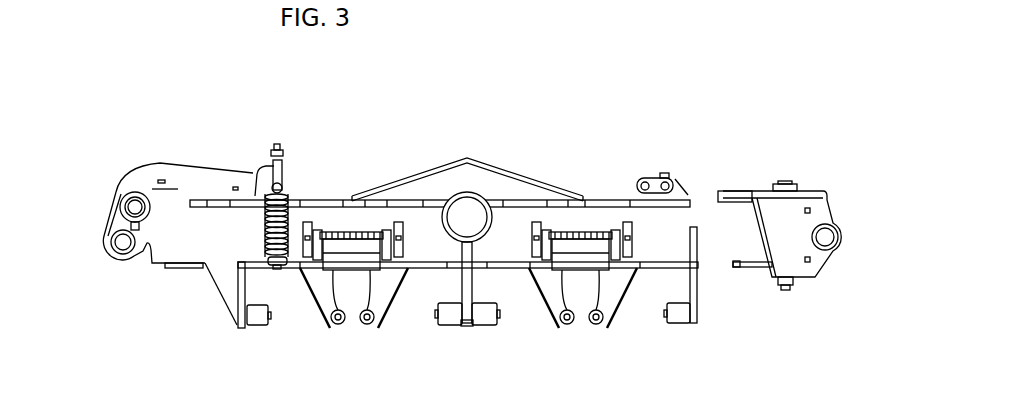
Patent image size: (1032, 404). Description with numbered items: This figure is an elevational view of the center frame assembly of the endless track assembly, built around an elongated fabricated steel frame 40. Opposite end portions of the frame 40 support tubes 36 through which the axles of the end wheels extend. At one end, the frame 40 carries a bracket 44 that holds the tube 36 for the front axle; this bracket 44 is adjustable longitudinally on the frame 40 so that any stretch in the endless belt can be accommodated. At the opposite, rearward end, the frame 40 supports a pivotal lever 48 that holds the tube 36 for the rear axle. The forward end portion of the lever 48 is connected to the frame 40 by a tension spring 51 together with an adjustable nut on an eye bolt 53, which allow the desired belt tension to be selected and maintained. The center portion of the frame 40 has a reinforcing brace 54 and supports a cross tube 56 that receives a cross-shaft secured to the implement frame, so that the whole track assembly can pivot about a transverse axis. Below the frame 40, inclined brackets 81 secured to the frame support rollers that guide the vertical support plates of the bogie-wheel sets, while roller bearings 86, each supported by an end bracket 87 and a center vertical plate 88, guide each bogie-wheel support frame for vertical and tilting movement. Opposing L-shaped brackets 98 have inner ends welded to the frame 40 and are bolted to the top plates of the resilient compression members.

The tube 36 is at (125, 250).
The frame 40 is at (609, 180).
The bracket 44 is at (783, 240).
The pivotal lever 48 is at (198, 185).
The tension spring 51 is at (270, 222).
The eye bolt 53 is at (280, 150).
The reinforcing brace 54 is at (518, 177).
The cross tube 56 is at (470, 195).
The inclined bracket 81 is at (330, 295).
The roller bearing 86 is at (260, 312).
The end bracket 87 is at (227, 285).
The center vertical plate 88 is at (468, 285).
The L-shaped bracket 98 is at (628, 235).